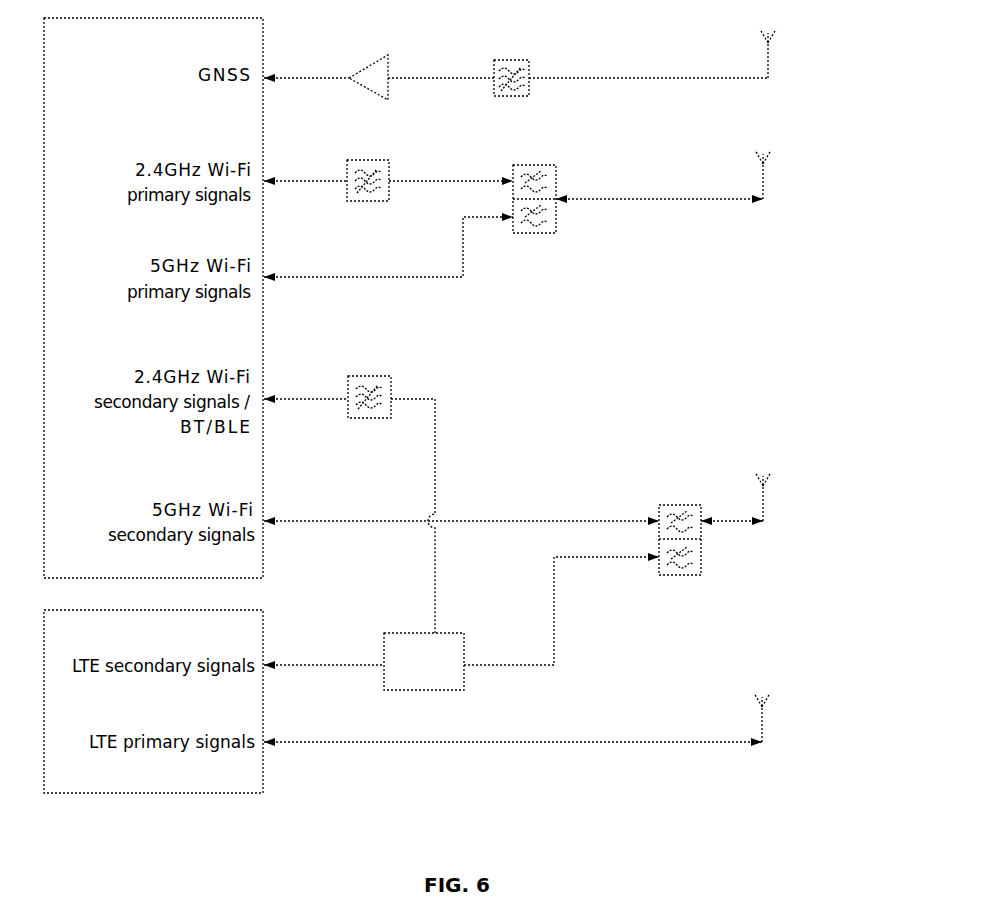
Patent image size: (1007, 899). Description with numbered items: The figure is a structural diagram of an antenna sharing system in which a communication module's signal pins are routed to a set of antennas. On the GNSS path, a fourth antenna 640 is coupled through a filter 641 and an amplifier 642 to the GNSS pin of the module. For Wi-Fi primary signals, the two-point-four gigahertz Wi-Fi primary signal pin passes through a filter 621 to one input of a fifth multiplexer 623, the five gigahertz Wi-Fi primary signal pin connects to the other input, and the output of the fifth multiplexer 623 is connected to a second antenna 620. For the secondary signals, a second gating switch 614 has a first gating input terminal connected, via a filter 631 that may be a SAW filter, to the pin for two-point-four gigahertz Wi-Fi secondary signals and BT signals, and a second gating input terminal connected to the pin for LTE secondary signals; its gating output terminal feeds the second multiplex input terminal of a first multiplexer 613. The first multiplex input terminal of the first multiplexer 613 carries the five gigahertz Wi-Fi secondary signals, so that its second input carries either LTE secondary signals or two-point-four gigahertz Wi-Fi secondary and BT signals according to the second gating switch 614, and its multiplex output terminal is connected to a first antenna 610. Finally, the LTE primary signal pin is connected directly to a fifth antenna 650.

The first antenna 610 is at (768, 500).
The first multiplexer 613 is at (673, 503).
The second gating switch 614 is at (420, 631).
The second antenna 620 is at (768, 178).
The filter 621 is at (368, 158).
The fifth multiplexer 623 is at (538, 163).
The filter 631 is at (373, 374).
The fourth antenna 640 is at (770, 57).
The filter 641 is at (510, 58).
The amplifier 642 is at (366, 64).
The fifth antenna 650 is at (767, 728).